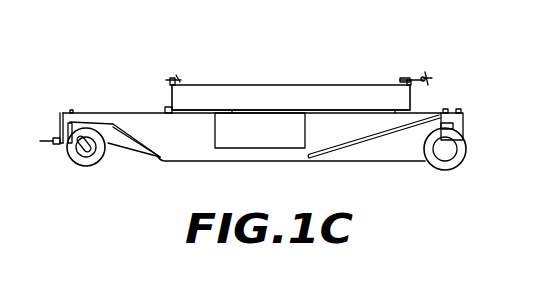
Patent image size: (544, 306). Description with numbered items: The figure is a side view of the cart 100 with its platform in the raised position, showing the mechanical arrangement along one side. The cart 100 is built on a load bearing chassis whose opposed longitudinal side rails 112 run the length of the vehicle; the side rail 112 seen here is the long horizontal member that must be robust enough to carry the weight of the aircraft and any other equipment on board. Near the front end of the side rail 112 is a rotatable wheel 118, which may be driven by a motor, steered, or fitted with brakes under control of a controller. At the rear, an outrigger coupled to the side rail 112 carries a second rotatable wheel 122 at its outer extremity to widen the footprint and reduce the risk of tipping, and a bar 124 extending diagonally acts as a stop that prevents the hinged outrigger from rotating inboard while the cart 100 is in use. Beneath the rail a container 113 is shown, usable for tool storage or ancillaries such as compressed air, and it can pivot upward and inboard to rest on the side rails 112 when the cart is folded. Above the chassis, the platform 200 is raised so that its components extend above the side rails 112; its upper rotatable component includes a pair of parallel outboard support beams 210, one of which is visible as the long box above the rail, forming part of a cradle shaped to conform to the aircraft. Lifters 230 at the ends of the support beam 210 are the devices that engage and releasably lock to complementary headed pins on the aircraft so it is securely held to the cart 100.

The cart 100 is at (68, 60).
The side rail 112 is at (148, 122).
The container 113 is at (273, 140).
The rotatable wheel 118 is at (85, 168).
The rotatable wheel 122 is at (447, 172).
The bar 124 is at (353, 144).
The platform 200 is at (434, 94).
The outboard support beam 210 is at (283, 97).
The lifter 230 is at (173, 79).